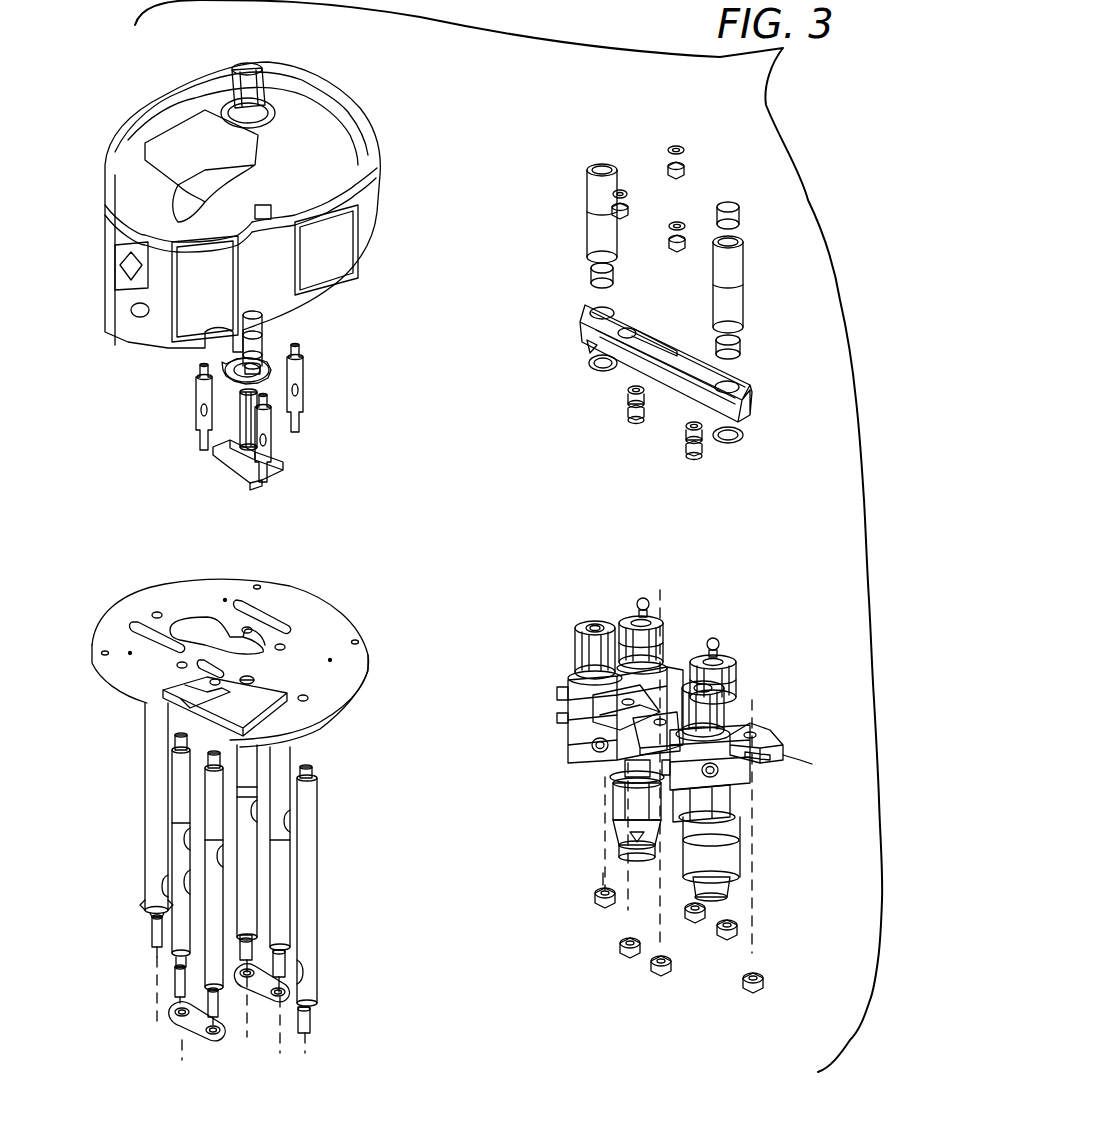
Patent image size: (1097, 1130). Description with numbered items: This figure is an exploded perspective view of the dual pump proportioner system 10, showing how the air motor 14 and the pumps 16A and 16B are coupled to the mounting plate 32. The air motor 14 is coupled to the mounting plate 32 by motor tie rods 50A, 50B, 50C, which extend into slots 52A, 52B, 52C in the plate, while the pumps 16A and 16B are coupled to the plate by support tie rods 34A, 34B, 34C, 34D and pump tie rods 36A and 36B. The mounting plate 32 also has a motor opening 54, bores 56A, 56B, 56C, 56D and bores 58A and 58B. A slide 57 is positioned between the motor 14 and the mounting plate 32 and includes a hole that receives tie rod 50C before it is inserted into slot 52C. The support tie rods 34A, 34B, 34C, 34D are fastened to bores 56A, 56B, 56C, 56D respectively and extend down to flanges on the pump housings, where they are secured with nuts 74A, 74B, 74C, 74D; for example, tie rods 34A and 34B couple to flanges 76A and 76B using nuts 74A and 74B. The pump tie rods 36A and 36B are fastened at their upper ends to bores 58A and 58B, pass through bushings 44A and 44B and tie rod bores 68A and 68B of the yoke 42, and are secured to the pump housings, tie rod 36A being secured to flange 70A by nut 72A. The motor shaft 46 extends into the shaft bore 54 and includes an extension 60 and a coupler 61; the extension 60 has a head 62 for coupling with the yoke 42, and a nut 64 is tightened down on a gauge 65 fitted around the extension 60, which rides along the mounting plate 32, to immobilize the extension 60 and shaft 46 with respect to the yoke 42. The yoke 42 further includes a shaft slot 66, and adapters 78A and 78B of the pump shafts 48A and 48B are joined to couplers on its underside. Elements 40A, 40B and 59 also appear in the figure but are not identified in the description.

The dual pump proportioner system 10 is at (418, 125).
The air motor 14 is at (120, 113).
The pump 16A is at (727, 873).
The pump 16B is at (620, 830).
The mounting plate 32 is at (307, 603).
The support tie rod 34A is at (210, 908).
The support tie rod 34B is at (177, 862).
The support tie rod 34C is at (283, 852).
The support tie rod 34D is at (250, 815).
The pump tie rod 36A is at (310, 885).
The pump tie rod 36B is at (152, 780).
The link bracket 40A is at (190, 1022).
The link bracket 40B is at (263, 992).
The yoke 42 is at (586, 341).
The bushing 44A is at (740, 313).
The bushing 44B is at (590, 228).
The motor shaft 46 is at (258, 328).
The pump shaft 48A is at (722, 660).
The pump shaft 48B is at (647, 617).
The motor tie rod 50A is at (303, 393).
The motor tie rod 50B is at (197, 397).
The motor tie rod 50C is at (268, 440).
The slot 52A is at (260, 615).
The slot 52B is at (157, 640).
The slot 52C is at (217, 670).
The motor opening 54 is at (193, 620).
The bore 56A is at (210, 683).
The bore 56B is at (178, 665).
The bore 56C is at (247, 628).
The bore 56D is at (282, 646).
The slide 57 is at (238, 710).
The bore 58A is at (309, 698).
The bore 58B is at (156, 613).
The hole 59 is at (258, 678).
The extension 60 is at (242, 413).
The coupler 61 is at (240, 352).
The head 62 is at (240, 453).
The nut 64 is at (264, 370).
The gauge 65 is at (272, 458).
The shaft slot 66 is at (662, 343).
The tie rod bore 68A is at (730, 387).
The tie rod bore 68B is at (600, 313).
The flange 70A is at (764, 740).
The nut 72A is at (597, 900).
The nut 74A is at (657, 970).
The nut 74B is at (625, 950).
The nut 74C is at (727, 938).
The nut 74D is at (695, 918).
The flange 76A is at (648, 730).
The flange 76B is at (617, 710).
The adapter 78A is at (687, 437).
The adapter 78B is at (627, 400).